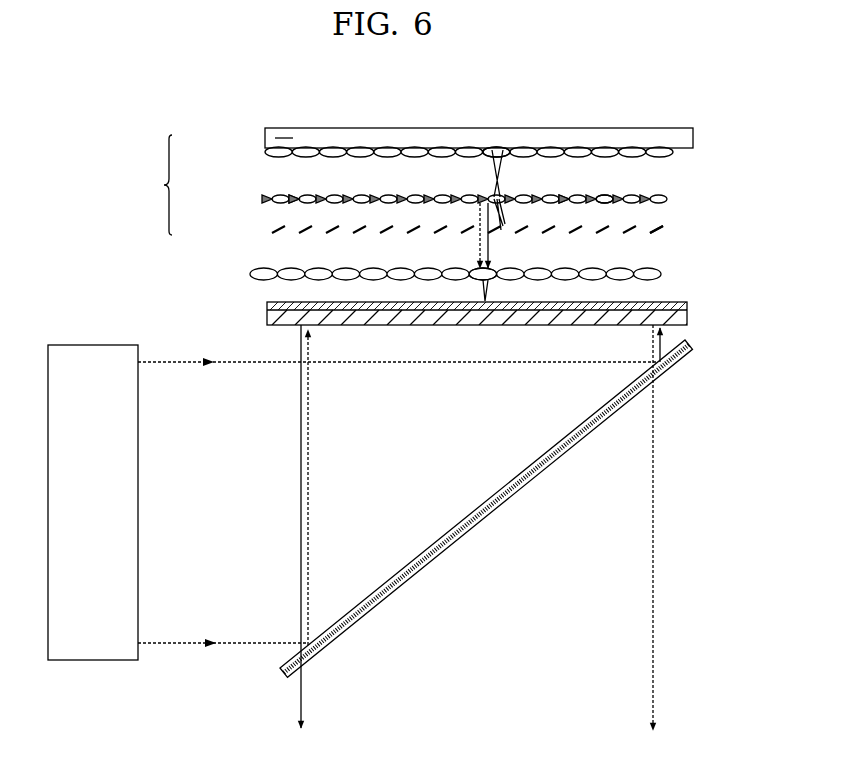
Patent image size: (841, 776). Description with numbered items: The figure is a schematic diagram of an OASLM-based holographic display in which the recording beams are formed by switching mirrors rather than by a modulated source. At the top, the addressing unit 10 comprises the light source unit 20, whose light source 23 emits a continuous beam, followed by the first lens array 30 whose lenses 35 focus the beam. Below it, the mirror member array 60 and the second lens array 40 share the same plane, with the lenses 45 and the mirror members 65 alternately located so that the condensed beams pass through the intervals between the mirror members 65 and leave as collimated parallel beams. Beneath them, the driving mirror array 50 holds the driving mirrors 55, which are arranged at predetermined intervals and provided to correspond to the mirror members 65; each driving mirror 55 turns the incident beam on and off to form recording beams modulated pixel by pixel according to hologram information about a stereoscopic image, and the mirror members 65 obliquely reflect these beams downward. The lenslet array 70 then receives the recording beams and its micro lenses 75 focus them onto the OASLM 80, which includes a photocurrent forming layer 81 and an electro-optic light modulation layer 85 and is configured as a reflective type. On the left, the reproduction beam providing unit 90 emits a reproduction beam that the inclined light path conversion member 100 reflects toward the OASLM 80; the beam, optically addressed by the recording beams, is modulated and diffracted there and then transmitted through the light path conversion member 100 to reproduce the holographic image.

The addressing unit 10 is at (154, 185).
The light source unit 20 is at (262, 134).
The light source 23 is at (284, 136).
The first lens array 30 is at (262, 152).
The lens 35 is at (497, 148).
The second lens array 40 is at (291, 189).
The lens 45 is at (605, 195).
The driving mirror array 50 is at (262, 230).
The driving mirror 55 is at (660, 229).
The mirror member array 60 is at (259, 198).
The mirror member 65 is at (562, 195).
The lenslet array 70 is at (252, 274).
The micro lens 75 is at (491, 270).
The OASLM 80 is at (457, 321).
The photocurrent forming layer 81 is at (689, 303).
The electro-optic light modulation layer 85 is at (689, 323).
The reproduction beam providing unit 90 is at (93, 345).
The light path conversion member 100 is at (690, 349).